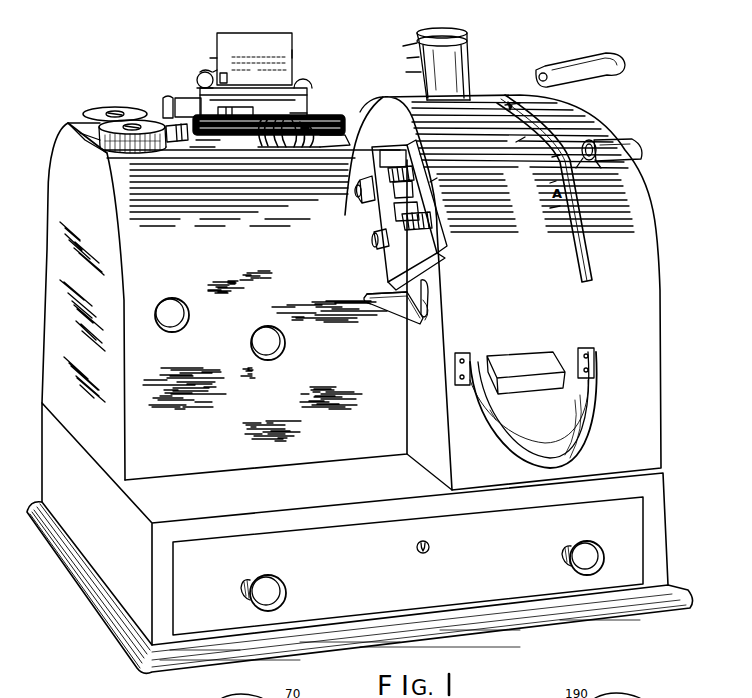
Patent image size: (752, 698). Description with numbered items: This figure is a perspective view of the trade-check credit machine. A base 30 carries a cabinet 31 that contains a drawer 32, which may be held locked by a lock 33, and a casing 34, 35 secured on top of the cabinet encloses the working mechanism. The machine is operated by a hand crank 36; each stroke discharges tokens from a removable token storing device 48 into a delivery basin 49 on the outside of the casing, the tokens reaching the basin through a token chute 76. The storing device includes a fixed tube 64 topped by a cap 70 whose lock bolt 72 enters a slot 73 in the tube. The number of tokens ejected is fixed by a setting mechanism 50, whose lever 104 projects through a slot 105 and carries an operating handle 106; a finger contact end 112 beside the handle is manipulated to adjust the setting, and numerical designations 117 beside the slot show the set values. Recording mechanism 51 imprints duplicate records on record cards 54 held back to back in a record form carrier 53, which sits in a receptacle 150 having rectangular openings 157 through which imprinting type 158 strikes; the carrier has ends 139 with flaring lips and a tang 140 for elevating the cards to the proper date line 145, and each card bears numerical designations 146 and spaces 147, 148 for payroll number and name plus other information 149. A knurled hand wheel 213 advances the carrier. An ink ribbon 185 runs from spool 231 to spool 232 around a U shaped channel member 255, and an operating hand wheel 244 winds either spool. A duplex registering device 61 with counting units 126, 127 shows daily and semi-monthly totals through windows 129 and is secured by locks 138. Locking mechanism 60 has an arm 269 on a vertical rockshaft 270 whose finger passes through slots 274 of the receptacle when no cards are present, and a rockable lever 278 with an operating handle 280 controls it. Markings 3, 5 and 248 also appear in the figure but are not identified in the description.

The register 3 is at (523, 146).
The operating lever 5 is at (566, 265).
The base 30 is at (121, 638).
The cabinet 31 is at (145, 590).
The drawer 32 is at (643, 550).
The lock 33 is at (432, 547).
The casing 34 is at (47, 255).
The casing 35 is at (648, 185).
The hand crank 36 is at (558, 84).
The removable token storing device 48 is at (402, 76).
The delivery basin 49 is at (612, 438).
The setting mechanism 50 is at (546, 212).
The recording mechanism 51 is at (216, 150).
The record form carrier 53 is at (196, 64).
The record cards 54 is at (301, 45).
The locking mechanism 60 is at (371, 286).
The duplex registering device 61 is at (433, 215).
The fixed tube 64 is at (477, 83).
The cap 70 is at (467, 30).
The bolt 72 is at (407, 58).
The slot 73 is at (403, 47).
The token chute 76 is at (537, 350).
The lever 104 is at (587, 183).
The slot 105 is at (552, 157).
The operating handle 106 is at (625, 168).
The finger contact end 112 is at (550, 183).
The numerical designations 117 is at (512, 106).
The counting unit 126 is at (393, 159).
The counting unit 127 is at (408, 211).
The windows 129 is at (406, 189).
The locks 138 is at (375, 236).
The ends 139 is at (309, 73).
The tang 140 is at (197, 80).
The date lines 145 is at (290, 113).
The numerical designations 146 is at (213, 72).
The space 147 is at (267, 43).
The space 148 is at (292, 53).
The other information 149 is at (217, 58).
The receptacle 150 is at (300, 102).
The rectangular openings 157 is at (351, 107).
The imprinting type 158 is at (330, 142).
The ink ribbon 185 is at (343, 122).
The knurled hand wheel 213 is at (251, 346).
The spool 231 is at (87, 143).
The spool 232 is at (97, 105).
The operating hand wheel 244 is at (172, 298).
The key lever 248 is at (430, 182).
The U shaped channel member 255 is at (360, 145).
The arm 269 is at (165, 98).
The vertical rockshaft 270 is at (162, 108).
The slots 274 is at (322, 70).
The rockable lever 278 is at (365, 298).
The operating handle 280 is at (422, 315).